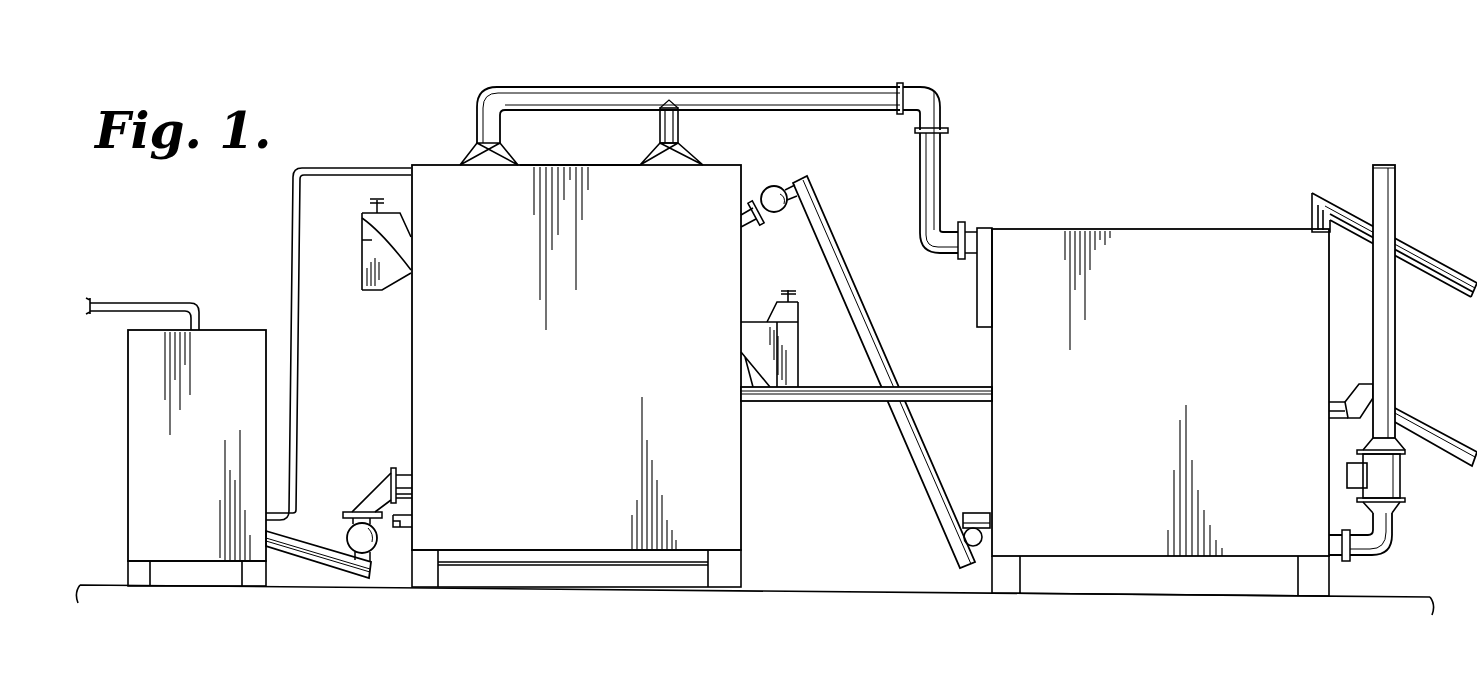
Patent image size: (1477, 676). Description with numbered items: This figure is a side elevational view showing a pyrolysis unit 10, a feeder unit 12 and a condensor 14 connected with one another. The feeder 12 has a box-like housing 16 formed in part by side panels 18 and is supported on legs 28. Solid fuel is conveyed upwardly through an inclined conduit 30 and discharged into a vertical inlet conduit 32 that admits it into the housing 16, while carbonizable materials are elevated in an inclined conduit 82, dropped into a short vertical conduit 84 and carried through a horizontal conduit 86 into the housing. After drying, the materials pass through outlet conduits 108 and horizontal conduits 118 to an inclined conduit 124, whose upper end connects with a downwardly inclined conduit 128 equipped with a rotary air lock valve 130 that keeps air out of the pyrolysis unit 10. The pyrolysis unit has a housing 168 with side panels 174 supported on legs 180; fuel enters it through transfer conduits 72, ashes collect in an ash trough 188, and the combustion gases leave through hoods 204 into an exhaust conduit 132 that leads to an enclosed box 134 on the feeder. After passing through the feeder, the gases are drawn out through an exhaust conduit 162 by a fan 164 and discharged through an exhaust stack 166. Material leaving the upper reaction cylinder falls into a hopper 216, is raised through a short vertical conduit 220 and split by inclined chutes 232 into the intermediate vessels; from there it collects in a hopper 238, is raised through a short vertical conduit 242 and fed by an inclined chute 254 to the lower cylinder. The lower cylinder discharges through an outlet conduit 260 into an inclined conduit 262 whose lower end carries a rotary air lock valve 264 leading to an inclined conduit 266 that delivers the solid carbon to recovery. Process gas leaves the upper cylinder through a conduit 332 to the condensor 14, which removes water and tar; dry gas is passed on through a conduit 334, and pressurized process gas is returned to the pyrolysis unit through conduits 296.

The pyrolysis unit 10 is at (445, 100).
The feeder unit 12 is at (1155, 205).
The condensor 14 is at (241, 316).
The feeder housing 16 is at (1058, 228).
The side panels 18 is at (1157, 400).
The legs 28 is at (1342, 584).
The inclined conduit 30 is at (1446, 276).
The vertical inlet conduit 32 is at (1313, 215).
The transfer conduits 72 is at (848, 401).
The inclined conduit 82 is at (1414, 422).
The short vertical conduit 84 is at (1336, 397).
The horizontal conduit 86 is at (1331, 415).
The outlet conduits 108 is at (975, 515).
The horizontal conduits 118 is at (988, 538).
The inclined conduit 124 is at (831, 242).
The downwardly inclined conduit 128 is at (750, 232).
The rotary air lock valve 130 is at (775, 186).
The exhaust conduit 132 is at (935, 181).
The enclosed box 134 is at (976, 292).
The exhaust conduit 162 is at (1330, 546).
The fan 164 is at (1390, 480).
The exhaust stack 166 is at (1390, 191).
The housing 168 is at (586, 166).
The side panels 174 is at (606, 330).
The legs 180 is at (752, 580).
The ash trough 188 is at (605, 566).
The hood 204 is at (676, 162).
The hopper 216 is at (375, 292).
The short vertical conduit 220 is at (362, 236).
The inclined chutes 232 is at (405, 268).
The hopper 238 is at (798, 366).
The short vertical conduit 242 is at (795, 310).
The inclined chute 254 is at (740, 370).
The outlet conduit 260 is at (395, 468).
The inclined conduit 262 is at (383, 490).
The rotary air lock valve 264 is at (350, 537).
The inclined conduit 266 is at (322, 561).
The conduits 296 is at (412, 525).
The conduit 332 is at (362, 168).
The conduit 334 is at (155, 305).